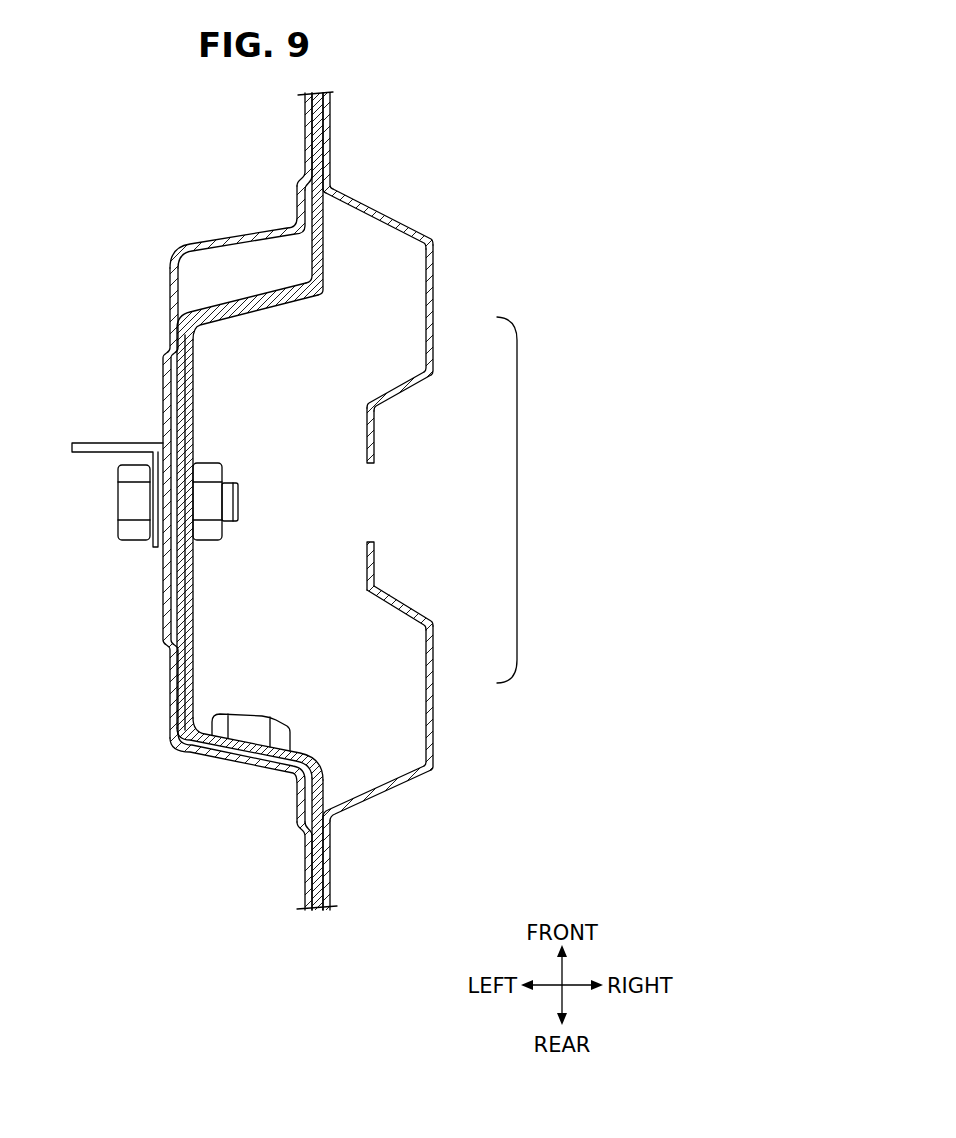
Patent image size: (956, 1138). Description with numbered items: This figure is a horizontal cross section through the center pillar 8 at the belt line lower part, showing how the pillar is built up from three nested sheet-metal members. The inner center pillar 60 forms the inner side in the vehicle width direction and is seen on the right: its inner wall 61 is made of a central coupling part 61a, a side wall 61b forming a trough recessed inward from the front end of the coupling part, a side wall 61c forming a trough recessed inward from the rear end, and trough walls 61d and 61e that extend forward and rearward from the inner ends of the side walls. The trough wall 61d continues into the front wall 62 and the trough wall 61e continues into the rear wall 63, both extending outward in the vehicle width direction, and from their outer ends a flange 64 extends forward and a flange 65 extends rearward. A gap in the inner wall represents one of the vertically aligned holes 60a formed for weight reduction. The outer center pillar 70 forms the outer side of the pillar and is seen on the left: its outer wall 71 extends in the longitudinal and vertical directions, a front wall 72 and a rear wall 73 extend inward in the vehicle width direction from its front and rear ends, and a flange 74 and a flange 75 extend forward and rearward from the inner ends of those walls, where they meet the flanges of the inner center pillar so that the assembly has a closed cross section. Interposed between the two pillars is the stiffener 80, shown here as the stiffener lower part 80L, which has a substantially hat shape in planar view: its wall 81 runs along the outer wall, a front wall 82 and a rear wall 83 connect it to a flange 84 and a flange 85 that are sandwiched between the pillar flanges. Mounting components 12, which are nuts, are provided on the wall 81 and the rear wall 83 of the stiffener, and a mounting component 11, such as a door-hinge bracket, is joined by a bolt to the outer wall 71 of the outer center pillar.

The center pillar 8 is at (505, 173).
The mounting component 11 is at (102, 440).
The mounting components 12 is at (204, 461).
The inner center pillar 60 is at (416, 142).
The holes 60a is at (370, 527).
The inner wall 61 is at (417, 507).
The coupling part 61a is at (378, 432).
The side wall 61b is at (403, 400).
The side wall 61c is at (433, 322).
The trough wall 61d is at (403, 606).
The trough wall 61e is at (434, 685).
The front wall 62 is at (398, 210).
The rear wall 63 is at (396, 797).
The flange 64 is at (330, 147).
The flange 65 is at (331, 857).
The outer center pillar 70 is at (110, 256).
The outer wall 71 is at (162, 579).
The front wall 72 is at (232, 236).
The rear wall 73 is at (255, 776).
The flange 74 is at (304, 137).
The flange 75 is at (304, 868).
The stiffener 80 is at (262, 458).
The stiffener lower part 80L is at (276, 501).
The wall 81 is at (195, 588).
The front wall 82 is at (262, 294).
The rear wall 83 is at (218, 769).
The flange 84 is at (325, 251).
The flange 85 is at (324, 784).